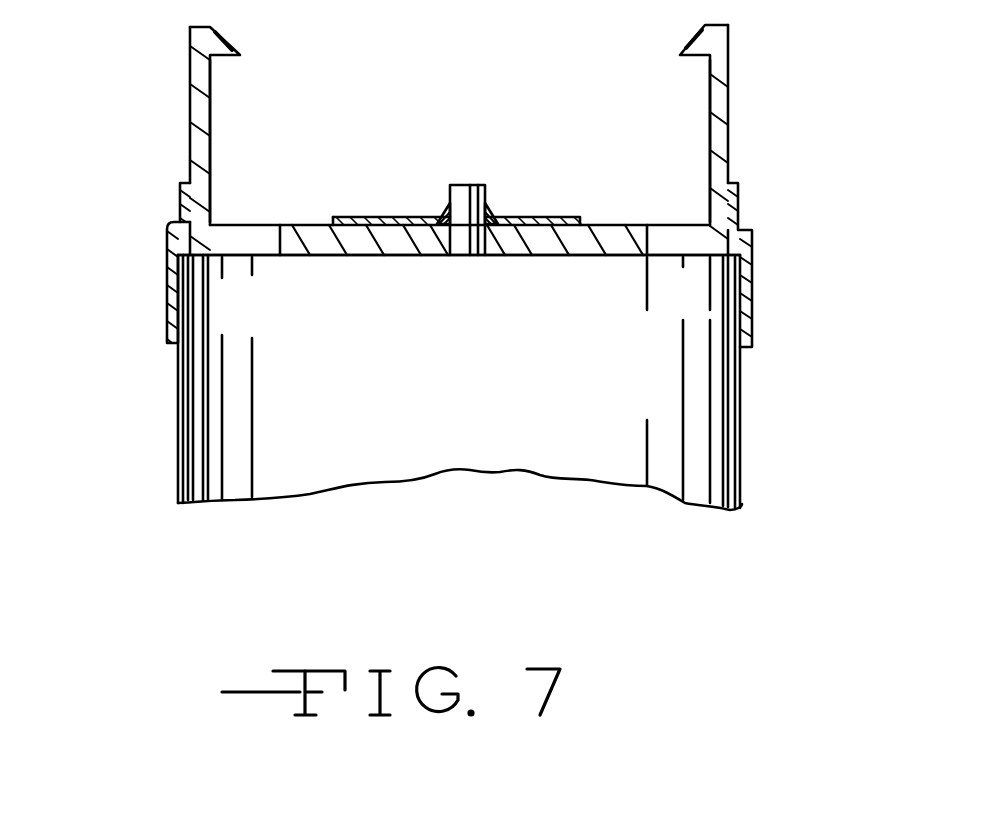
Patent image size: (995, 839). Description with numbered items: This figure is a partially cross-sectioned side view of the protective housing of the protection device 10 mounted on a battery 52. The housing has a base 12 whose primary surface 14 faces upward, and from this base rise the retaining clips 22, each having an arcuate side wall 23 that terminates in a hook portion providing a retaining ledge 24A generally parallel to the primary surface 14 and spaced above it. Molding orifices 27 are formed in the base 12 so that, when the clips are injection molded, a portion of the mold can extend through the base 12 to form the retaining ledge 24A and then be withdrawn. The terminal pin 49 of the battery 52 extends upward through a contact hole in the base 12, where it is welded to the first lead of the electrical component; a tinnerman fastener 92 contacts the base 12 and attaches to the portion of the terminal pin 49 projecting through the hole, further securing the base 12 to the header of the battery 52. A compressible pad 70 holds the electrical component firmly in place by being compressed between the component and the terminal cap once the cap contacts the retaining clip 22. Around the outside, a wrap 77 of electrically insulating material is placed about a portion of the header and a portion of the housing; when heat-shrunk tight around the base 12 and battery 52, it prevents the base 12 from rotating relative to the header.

The device 10 is at (746, 138).
The retaining clip 22 is at (200, 57).
The compressible pad 70 is at (718, 92).
The retaining ledge 24A is at (225, 57).
The arcuate side wall 23 is at (210, 143).
The primary surface 14 is at (310, 225).
The base 12 is at (371, 240).
The tinnerman fastener 92 is at (523, 217).
The terminal pin 49 is at (468, 258).
The molding orifice 27 is at (278, 238).
The battery 52 is at (600, 397).
The wrap 77 is at (167, 300).